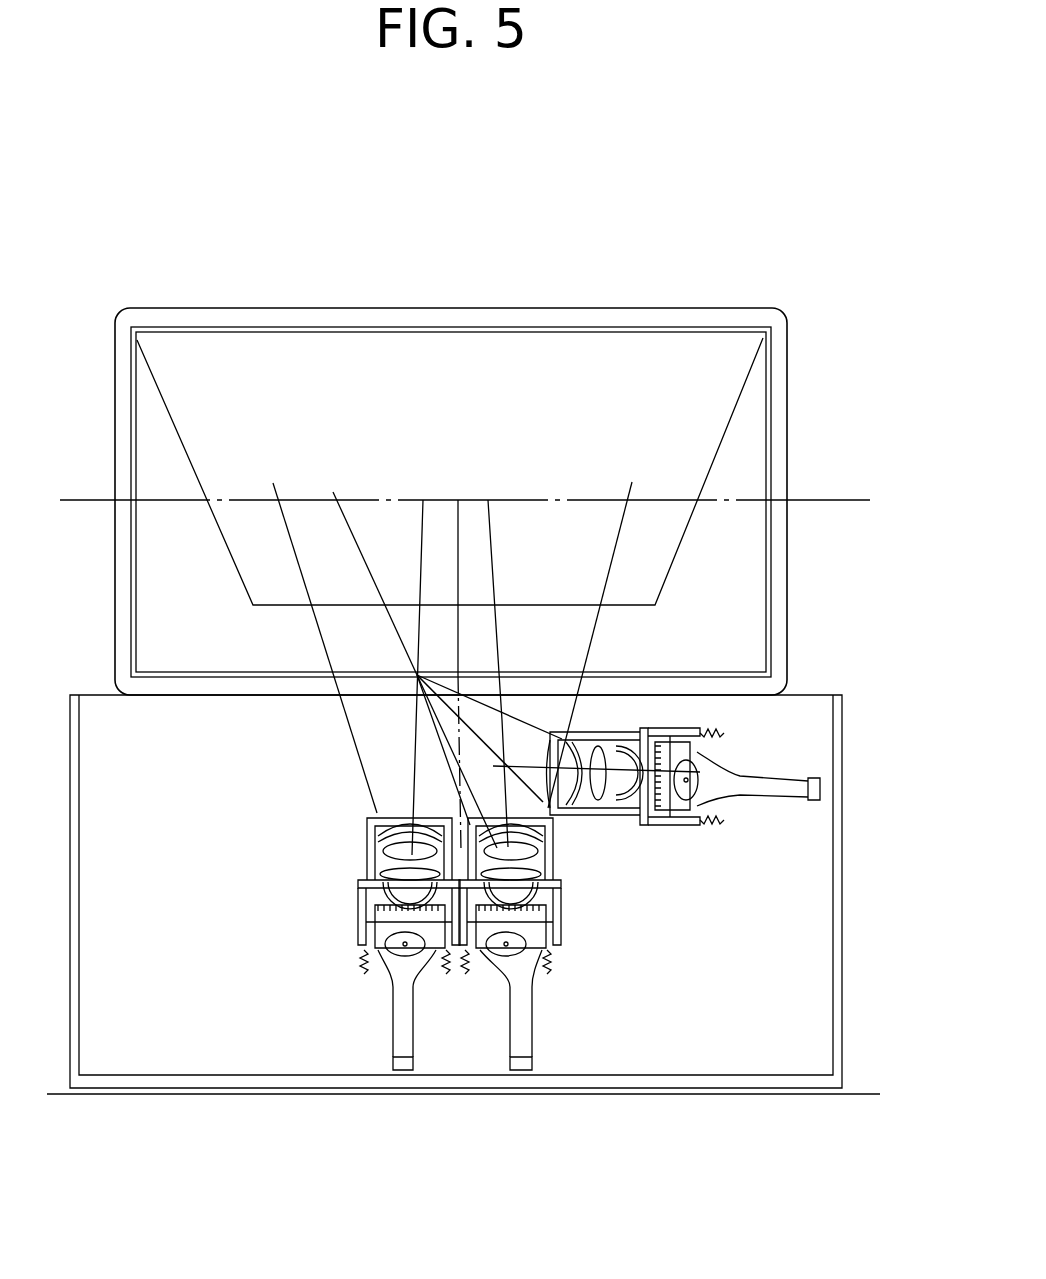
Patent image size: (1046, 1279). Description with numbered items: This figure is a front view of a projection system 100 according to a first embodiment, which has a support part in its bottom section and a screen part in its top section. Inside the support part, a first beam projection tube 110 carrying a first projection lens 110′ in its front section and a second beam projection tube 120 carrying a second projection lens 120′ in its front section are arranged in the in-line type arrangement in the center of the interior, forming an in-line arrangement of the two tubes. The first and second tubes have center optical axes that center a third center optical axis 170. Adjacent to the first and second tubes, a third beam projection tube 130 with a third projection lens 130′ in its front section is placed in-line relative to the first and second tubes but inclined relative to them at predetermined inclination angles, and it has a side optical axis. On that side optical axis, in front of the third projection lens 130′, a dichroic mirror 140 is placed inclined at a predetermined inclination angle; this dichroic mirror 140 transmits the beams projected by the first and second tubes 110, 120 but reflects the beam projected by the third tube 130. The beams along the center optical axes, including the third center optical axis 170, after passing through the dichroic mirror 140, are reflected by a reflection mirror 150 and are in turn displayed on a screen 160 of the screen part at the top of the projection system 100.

The projection system 100 is at (212, 310).
The first beam projection tube 110 is at (398, 1030).
The second beam projection tube 120 is at (525, 1030).
The third beam projection tube 130 is at (697, 800).
The first projection lens 110′ is at (366, 843).
The second projection lens 120′ is at (483, 820).
The third projection lens 130′ is at (582, 806).
The dichroic mirror 140 is at (498, 722).
The reflection mirror 150 is at (712, 350).
The screen 160 is at (620, 324).
The third center optical axis 170 is at (470, 522).